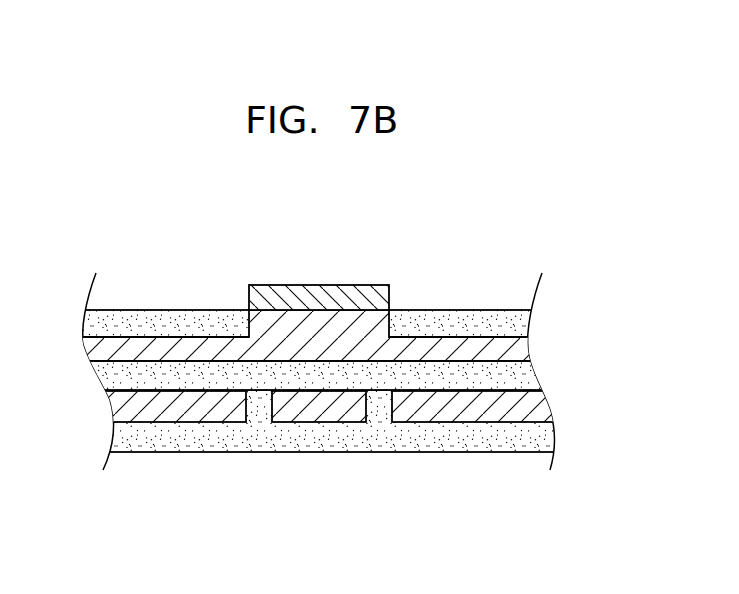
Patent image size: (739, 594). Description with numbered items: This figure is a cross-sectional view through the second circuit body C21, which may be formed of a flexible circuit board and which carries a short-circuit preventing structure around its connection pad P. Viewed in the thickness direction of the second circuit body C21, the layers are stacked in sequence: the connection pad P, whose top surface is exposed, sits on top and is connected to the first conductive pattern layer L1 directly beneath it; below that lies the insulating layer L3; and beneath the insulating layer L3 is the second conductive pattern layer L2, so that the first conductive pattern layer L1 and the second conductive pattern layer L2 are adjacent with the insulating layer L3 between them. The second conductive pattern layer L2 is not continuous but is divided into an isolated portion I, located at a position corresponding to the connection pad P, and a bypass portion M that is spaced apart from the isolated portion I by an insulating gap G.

The second circuit body C21 is at (147, 458).
The connection pad P is at (319, 285).
The first conductive pattern layer L1 is at (466, 345).
The second conductive pattern layer L2 is at (325, 522).
The insulating layer L3 is at (527, 377).
The bypass portion M is at (210, 413).
The isolated portion I is at (320, 413).
The insulating gap G is at (378, 413).